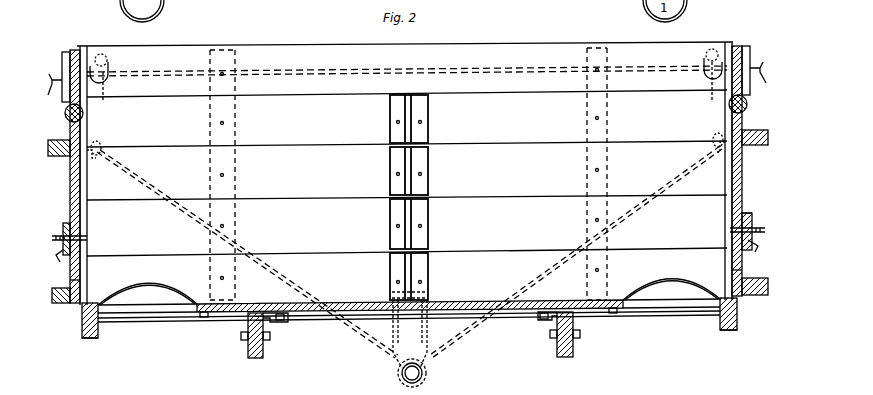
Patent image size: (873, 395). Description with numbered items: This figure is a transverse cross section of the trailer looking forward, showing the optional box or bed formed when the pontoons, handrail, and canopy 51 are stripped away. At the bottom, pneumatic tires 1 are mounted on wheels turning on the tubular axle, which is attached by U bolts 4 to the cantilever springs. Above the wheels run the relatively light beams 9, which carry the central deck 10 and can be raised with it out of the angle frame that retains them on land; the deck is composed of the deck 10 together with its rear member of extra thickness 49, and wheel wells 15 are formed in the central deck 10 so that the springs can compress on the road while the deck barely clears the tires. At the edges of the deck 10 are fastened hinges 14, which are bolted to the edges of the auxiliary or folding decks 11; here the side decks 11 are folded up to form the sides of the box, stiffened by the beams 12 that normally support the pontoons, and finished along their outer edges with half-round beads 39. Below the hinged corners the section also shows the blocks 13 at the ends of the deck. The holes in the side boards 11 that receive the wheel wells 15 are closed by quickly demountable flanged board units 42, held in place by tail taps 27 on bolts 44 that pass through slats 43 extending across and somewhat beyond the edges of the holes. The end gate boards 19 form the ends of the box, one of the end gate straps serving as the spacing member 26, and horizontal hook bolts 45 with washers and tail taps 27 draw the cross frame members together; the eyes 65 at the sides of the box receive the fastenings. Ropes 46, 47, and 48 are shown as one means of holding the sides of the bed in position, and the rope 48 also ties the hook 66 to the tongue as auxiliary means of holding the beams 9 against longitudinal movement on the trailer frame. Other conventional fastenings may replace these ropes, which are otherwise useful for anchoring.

The pneumatic tires 1 is at (417, 197).
The U bolts 4 is at (409, 197).
The beams 9 is at (246, 355).
The central deck 10 is at (409, 304).
The auxiliary decks 11 is at (79, 165).
The beams 12 is at (48, 148).
The foot block 13 is at (82, 340).
The hinges 14 is at (410, 318).
The wheel wells 15 is at (680, 295).
The end gate boards 19 is at (328, 70).
The spacing member 26 is at (407, 174).
The tail taps 27 is at (62, 66).
The half-round beads 39 is at (66, 112).
The flanged board units 42 is at (749, 266).
The slats 43 is at (752, 214).
The bolts 44 is at (52, 238).
The hook bolts 45 is at (407, 81).
The rope 46 is at (144, 69).
The rope 47 is at (270, 244).
The rope 48 is at (410, 334).
The rear member of extra thickness 49 is at (409, 322).
The canopy 51 is at (418, 380).
The eyelet 65 is at (94, 146).
The hook 66 is at (430, 290).